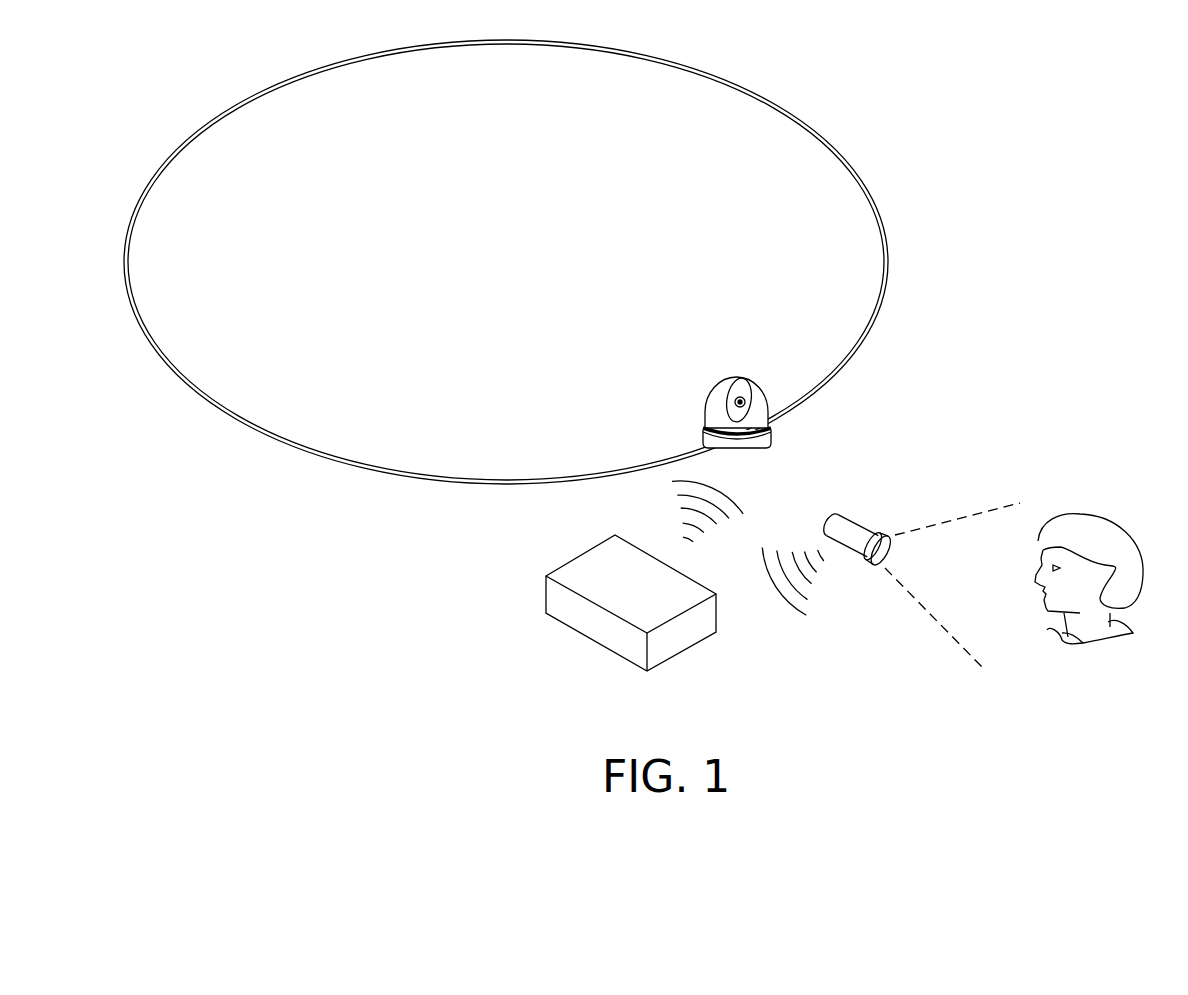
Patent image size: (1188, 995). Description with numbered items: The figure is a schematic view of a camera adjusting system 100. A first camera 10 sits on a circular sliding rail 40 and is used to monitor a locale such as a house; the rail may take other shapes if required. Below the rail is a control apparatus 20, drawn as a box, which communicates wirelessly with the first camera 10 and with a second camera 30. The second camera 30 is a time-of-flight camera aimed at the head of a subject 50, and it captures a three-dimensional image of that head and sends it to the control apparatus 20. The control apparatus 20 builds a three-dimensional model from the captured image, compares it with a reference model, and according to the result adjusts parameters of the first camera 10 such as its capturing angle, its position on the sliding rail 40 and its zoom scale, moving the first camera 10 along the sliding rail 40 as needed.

The camera adjusting system 100 is at (888, 76).
The sliding rail 40 is at (856, 168).
The first camera 10 is at (720, 407).
The control apparatus 20 is at (593, 577).
The second camera 30 is at (842, 525).
The subject 50 is at (1085, 538).